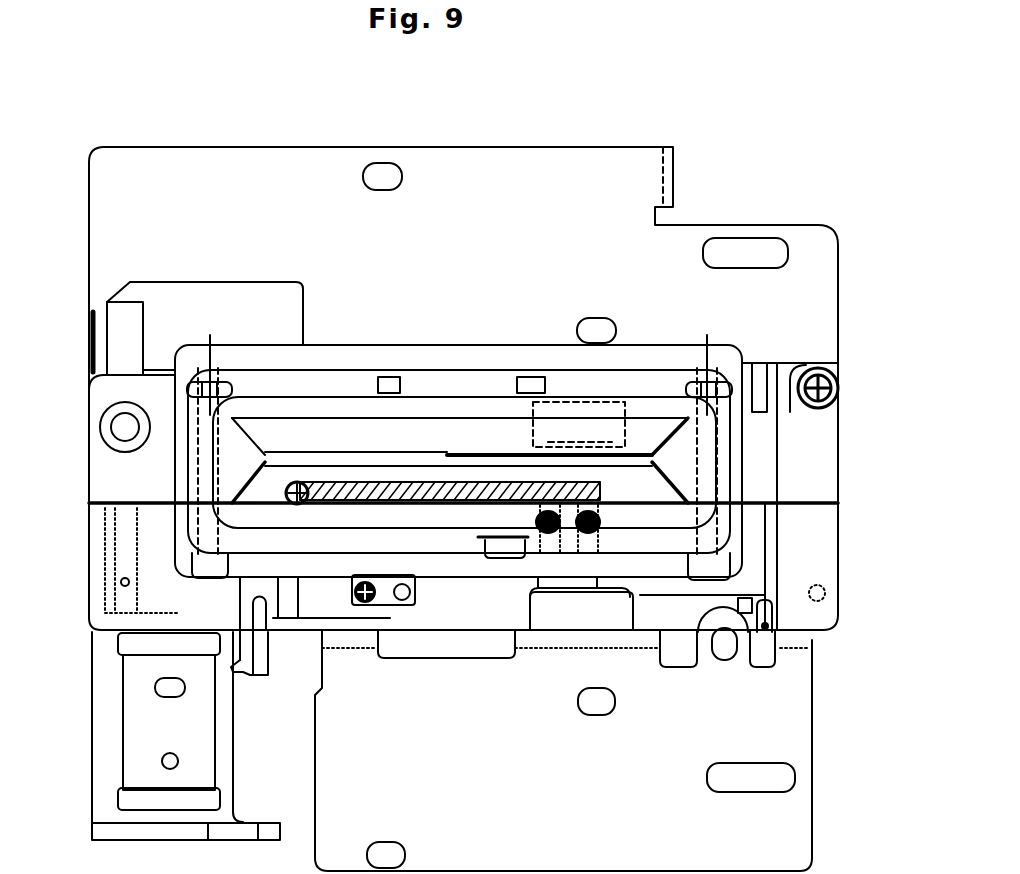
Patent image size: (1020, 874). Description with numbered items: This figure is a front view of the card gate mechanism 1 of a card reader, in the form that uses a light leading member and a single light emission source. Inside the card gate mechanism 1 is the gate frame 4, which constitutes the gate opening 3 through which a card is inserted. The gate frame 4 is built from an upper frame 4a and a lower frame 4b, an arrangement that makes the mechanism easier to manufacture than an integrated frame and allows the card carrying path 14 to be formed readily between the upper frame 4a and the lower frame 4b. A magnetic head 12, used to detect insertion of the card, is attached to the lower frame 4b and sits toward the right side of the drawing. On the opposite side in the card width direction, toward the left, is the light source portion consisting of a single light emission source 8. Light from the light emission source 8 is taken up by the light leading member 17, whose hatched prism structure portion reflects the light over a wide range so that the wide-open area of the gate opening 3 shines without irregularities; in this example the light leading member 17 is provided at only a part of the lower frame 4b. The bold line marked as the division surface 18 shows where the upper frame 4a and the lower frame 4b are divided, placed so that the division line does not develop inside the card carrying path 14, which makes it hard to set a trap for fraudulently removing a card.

The card gate mechanism 1 is at (70, 224).
The gate opening 3 is at (174, 477).
The gate frame 4 is at (880, 428).
The upper frame 4a is at (738, 453).
The lower frame 4b is at (733, 535).
The light emission source 8 is at (309, 505).
The magnetic head 12 is at (592, 498).
The card carrying path 14 is at (312, 458).
The light leading member 17 is at (400, 478).
The division surface 18 is at (153, 508).